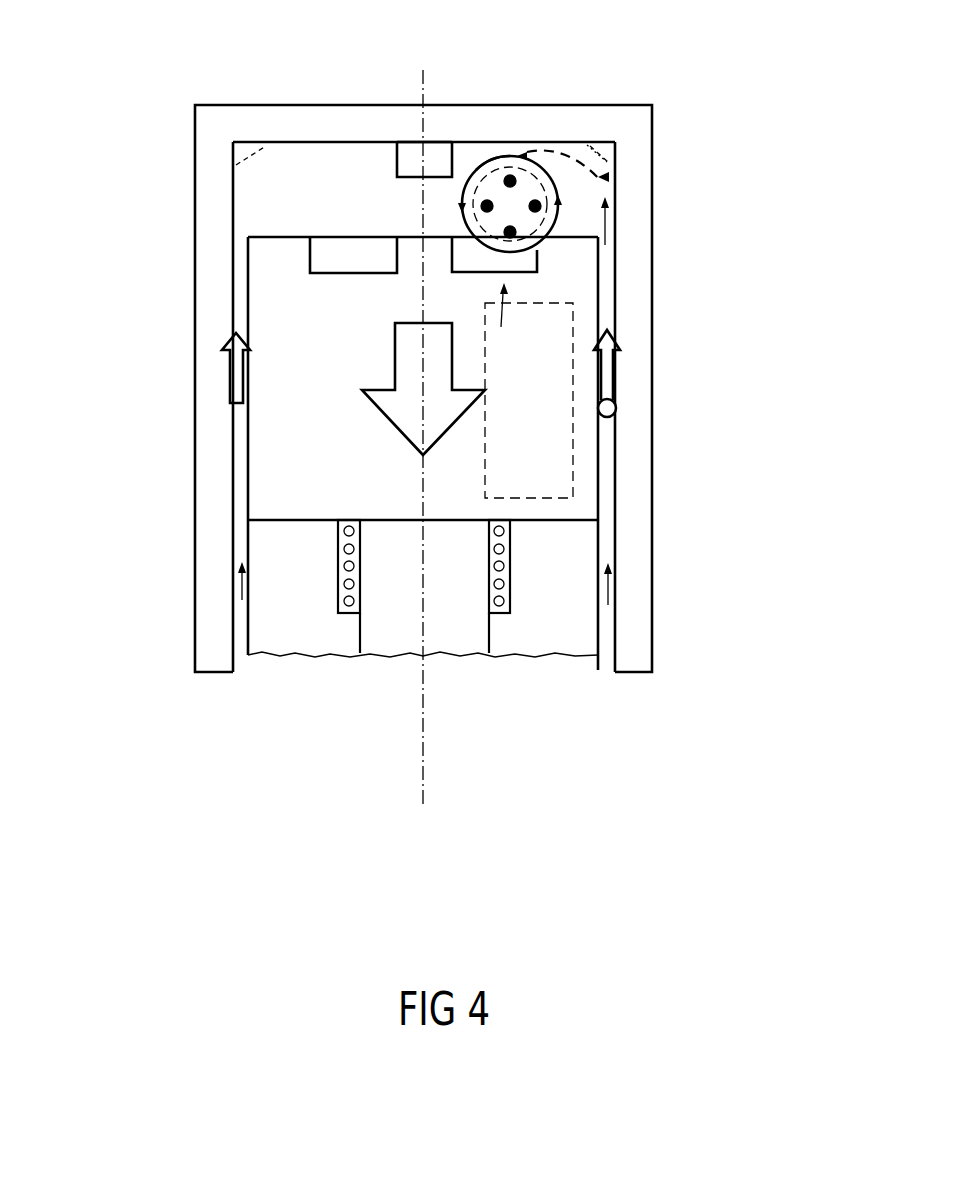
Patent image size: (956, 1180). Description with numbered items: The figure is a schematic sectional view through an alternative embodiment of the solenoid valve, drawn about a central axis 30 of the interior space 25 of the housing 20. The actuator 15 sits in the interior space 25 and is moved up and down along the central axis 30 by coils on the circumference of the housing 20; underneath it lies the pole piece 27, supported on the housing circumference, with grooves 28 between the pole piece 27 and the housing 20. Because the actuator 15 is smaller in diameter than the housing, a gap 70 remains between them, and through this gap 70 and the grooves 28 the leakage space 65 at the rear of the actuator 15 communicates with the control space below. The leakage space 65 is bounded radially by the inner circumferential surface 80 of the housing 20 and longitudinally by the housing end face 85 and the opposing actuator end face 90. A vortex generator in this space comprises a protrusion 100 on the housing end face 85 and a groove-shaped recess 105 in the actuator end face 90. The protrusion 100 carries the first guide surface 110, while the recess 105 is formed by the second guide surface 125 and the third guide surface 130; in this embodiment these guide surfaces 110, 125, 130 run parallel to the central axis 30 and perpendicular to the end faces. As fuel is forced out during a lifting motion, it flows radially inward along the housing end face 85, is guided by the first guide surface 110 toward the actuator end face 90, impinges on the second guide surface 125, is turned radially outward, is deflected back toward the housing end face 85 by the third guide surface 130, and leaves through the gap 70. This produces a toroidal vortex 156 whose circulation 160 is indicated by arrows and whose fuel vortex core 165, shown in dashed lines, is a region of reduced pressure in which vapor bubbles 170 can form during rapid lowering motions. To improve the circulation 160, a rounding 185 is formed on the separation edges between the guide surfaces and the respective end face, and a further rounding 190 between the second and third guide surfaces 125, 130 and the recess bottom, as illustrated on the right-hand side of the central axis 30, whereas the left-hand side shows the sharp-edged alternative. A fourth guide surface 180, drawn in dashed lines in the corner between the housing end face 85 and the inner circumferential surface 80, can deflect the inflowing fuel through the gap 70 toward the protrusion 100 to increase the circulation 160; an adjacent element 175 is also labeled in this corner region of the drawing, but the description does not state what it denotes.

The actuator 15 is at (573, 473).
The housing 20 is at (617, 409).
The interior space 25 is at (580, 613).
The pole piece 27 is at (297, 622).
The grooves 28 is at (240, 632).
The central axis 30 is at (424, 760).
The leakage space 65 is at (275, 183).
The gap 70 is at (608, 487).
The inner circumferential surface 80 is at (450, 612).
The housing end face 85 is at (582, 155).
The actuator end face 90 is at (529, 390).
The protrusion 100 is at (437, 147).
The recess 105 is at (345, 258).
The first guide surface 110 is at (492, 150).
The second guide surface 125 is at (353, 342).
The third guide surface 130 is at (312, 252).
The vortex 156 is at (604, 177).
The circulation 160 is at (458, 202).
The fuel vortex core 165 is at (462, 195).
The vapor bubbles 170 is at (535, 200).
The corner passage 175 is at (603, 162).
The fourth guide surface 180 is at (268, 148).
The rounding 185 is at (452, 240).
The further rounding 190 is at (452, 247).